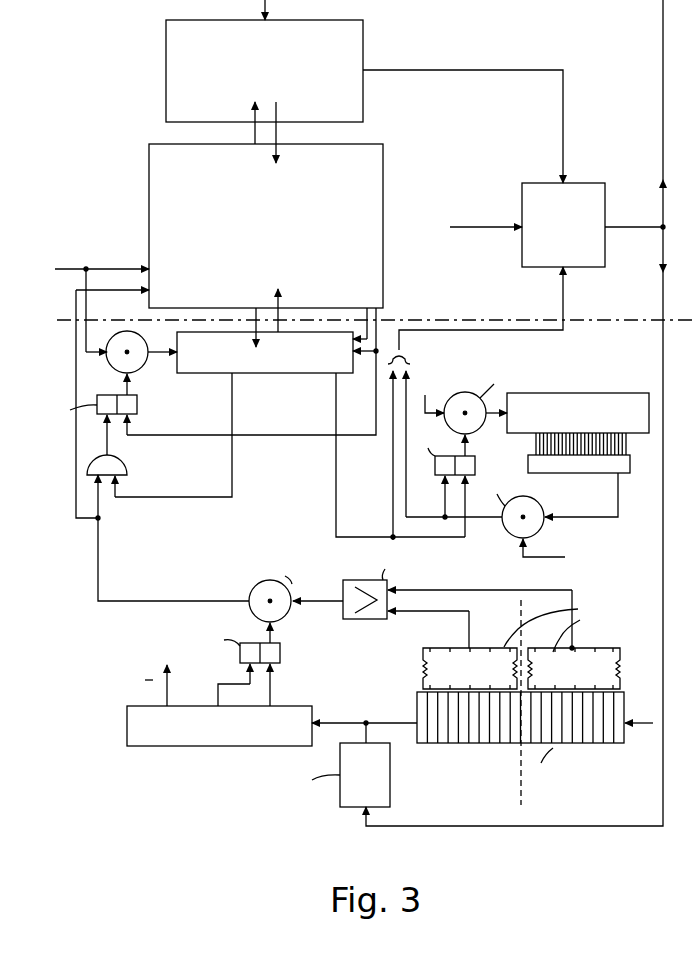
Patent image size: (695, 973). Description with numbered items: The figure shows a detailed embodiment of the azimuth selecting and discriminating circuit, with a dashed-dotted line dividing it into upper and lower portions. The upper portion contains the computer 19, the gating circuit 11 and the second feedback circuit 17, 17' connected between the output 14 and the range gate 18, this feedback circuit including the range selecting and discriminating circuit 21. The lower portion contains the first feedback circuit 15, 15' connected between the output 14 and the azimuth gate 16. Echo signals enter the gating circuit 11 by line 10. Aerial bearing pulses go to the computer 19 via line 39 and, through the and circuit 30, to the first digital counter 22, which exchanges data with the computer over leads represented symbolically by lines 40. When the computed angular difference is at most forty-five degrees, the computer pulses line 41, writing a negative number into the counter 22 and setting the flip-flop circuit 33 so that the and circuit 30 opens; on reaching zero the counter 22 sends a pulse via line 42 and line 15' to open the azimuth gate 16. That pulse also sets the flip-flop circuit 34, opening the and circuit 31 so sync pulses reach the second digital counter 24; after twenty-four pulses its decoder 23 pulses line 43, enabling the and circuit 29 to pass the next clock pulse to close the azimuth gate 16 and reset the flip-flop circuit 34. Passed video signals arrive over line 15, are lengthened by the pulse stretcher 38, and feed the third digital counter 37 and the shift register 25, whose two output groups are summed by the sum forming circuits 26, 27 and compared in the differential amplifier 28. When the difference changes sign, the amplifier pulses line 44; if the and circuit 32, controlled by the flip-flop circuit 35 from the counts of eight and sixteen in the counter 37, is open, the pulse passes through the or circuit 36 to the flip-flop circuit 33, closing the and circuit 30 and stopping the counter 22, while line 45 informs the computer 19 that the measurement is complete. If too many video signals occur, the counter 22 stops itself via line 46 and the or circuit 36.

The line 10 is at (486, 216).
The gating circuit 11 is at (605, 193).
The output 14 is at (605, 229).
The first feedback circuit line 15 is at (515, 525).
The first feedback circuit line 15' is at (496, 308).
The azimuth gate 16 is at (563, 267).
The second feedback circuit line 17 is at (651, 113).
The second feedback circuit line 17' is at (477, 126).
The range gate 18 is at (558, 183).
The computer 19 is at (392, 152).
The range selecting and discriminating circuit 21 is at (354, 30).
The first digital counter 22 is at (272, 373).
The decoder 23 is at (590, 465).
The second digital counter 24 is at (558, 398).
The shift register 25 is at (570, 745).
The sum forming circuit 26 is at (452, 650).
The sum forming circuit 27 is at (505, 637).
The differential amplifier 28 is at (341, 590).
The and circuit 29 is at (539, 523).
The and circuit 30 is at (148, 360).
The and circuit 31 is at (482, 422).
The and circuit 32 is at (285, 611).
The flip-flop circuit 33 is at (94, 414).
The flip-flop circuit 34 is at (454, 481).
The flip-flop circuit 35 is at (244, 664).
The or circuit 36 is at (141, 446).
The third digital counter 37 is at (207, 745).
The pulse stretcher 38 is at (390, 778).
The line 39 is at (102, 300).
The lines 40 is at (267, 318).
The line 41 is at (252, 371).
The line 42 is at (400, 456).
The line 43 is at (581, 495).
The line 44 is at (173, 548).
The line 45 is at (80, 372).
The line 46 is at (173, 445).